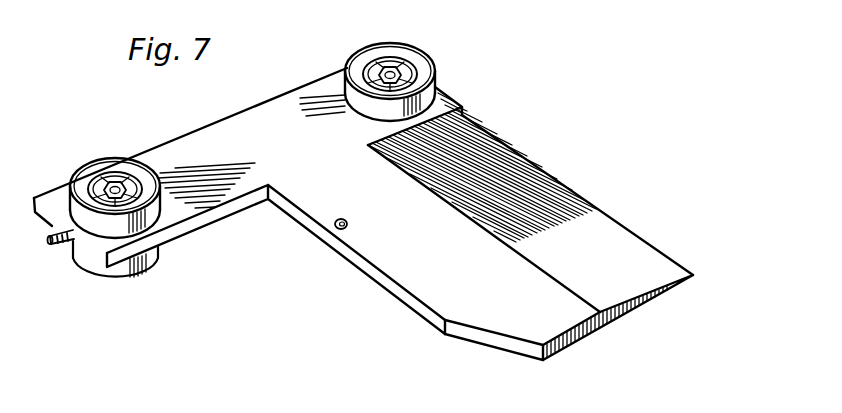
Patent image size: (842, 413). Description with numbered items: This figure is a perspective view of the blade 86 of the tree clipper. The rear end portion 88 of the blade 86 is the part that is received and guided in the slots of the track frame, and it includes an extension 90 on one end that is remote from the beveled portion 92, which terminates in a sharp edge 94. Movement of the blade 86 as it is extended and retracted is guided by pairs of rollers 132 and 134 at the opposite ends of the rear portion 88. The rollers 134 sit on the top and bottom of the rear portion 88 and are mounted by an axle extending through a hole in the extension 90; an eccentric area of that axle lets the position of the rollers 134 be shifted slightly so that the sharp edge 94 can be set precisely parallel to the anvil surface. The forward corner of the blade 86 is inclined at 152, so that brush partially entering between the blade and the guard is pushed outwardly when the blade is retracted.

The blade 86 is at (417, 263).
The rear end portion of the blade 88 is at (256, 123).
The extension 90 is at (156, 158).
The beveled portion 92 is at (523, 187).
The sharp edge 94 is at (615, 219).
The rollers 132 is at (408, 50).
The rollers 134 is at (94, 168).
The inclined forward corner 152 is at (500, 342).